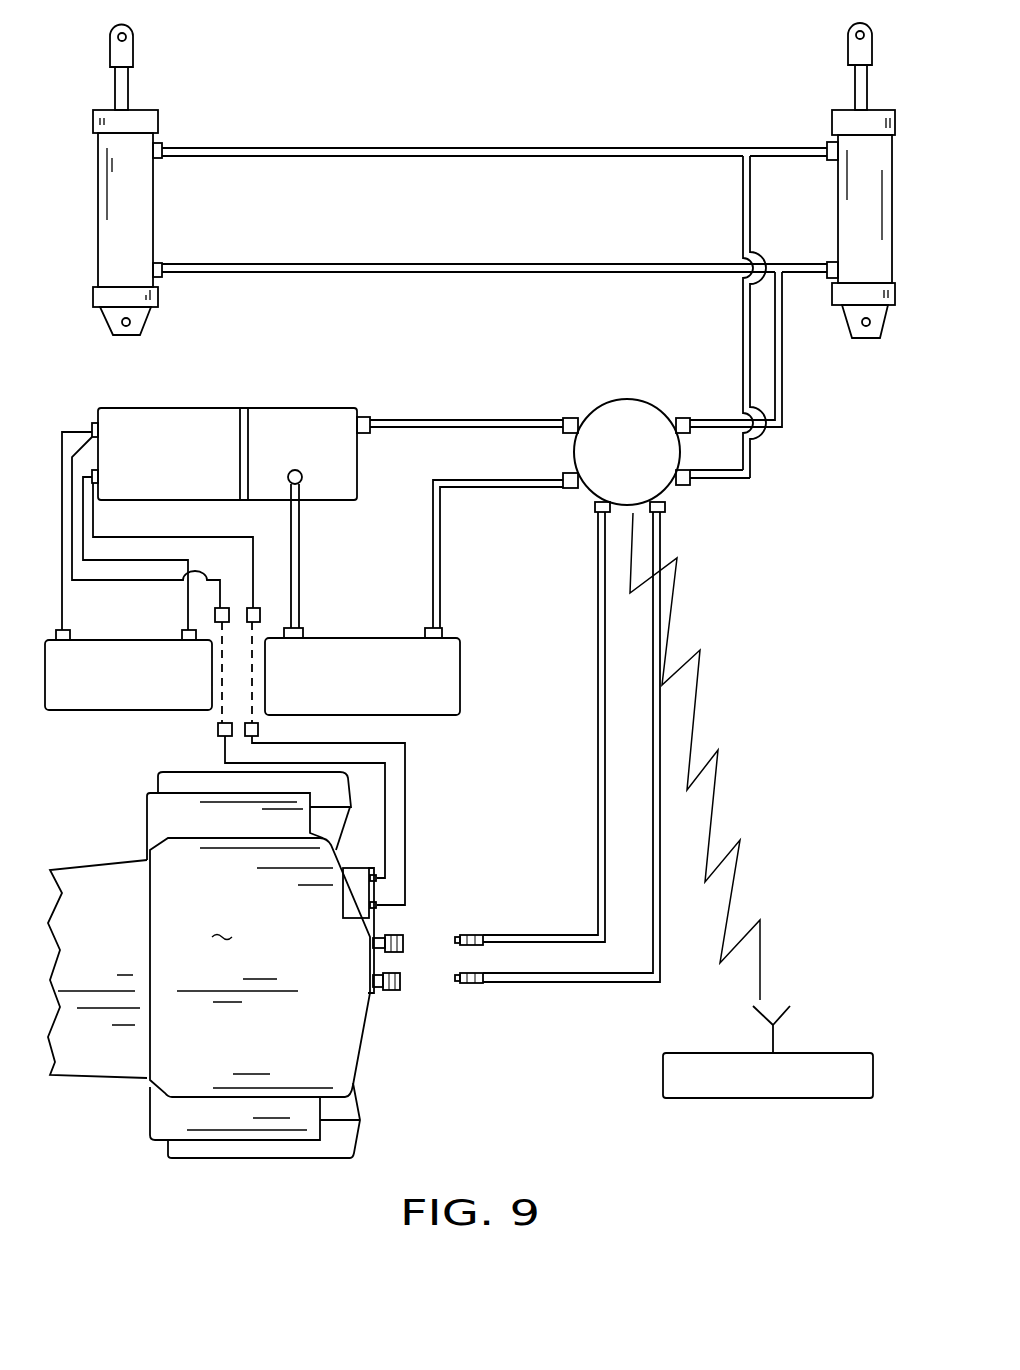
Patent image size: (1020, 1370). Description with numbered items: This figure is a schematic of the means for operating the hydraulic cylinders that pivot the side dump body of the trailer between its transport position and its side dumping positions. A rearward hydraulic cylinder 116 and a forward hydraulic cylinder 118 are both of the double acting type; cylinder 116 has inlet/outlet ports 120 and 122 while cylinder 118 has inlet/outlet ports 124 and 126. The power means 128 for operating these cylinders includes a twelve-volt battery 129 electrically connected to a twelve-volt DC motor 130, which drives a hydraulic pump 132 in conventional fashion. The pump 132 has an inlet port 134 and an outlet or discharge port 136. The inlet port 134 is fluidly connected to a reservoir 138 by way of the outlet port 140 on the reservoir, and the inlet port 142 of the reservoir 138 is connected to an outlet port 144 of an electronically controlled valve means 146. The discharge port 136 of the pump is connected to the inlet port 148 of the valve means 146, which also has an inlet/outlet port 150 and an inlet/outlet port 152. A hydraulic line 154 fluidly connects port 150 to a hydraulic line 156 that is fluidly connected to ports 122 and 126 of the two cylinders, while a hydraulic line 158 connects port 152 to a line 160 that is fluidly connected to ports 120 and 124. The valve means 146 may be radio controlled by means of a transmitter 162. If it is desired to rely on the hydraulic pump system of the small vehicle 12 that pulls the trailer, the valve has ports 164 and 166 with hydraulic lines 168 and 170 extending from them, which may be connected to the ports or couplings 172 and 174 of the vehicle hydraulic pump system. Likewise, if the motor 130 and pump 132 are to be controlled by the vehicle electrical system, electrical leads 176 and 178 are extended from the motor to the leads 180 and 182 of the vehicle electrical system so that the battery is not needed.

The small vehicle 12 is at (212, 965).
The rearward hydraulic cylinder 116 is at (133, 205).
The hydraulic cylinder 118 is at (877, 210).
The inlet/outlet port 120 is at (164, 147).
The inlet/outlet port 122 is at (163, 279).
The inlet/outlet port 124 is at (830, 145).
The inlet/outlet port 126 is at (830, 266).
The power means 128 is at (697, 613).
The 12-volt battery 129 is at (88, 712).
The 12-volt DC motor 130 is at (176, 408).
The hydraulic pump 132 is at (266, 408).
The inlet port 134 is at (303, 478).
The outlet or discharge port 136 is at (373, 413).
The reservoir 138 is at (370, 640).
The outlet port 140 is at (301, 632).
The inlet port 142 is at (440, 630).
The outlet port 144 is at (566, 486).
The electronically controlled valve means 146 is at (627, 399).
The inlet port 148 is at (567, 417).
The inlet/outlet port 150 is at (682, 417).
The inlet/outlet port 152 is at (692, 480).
The hydraulic line 154 is at (786, 378).
The hydraulic line 156 is at (640, 264).
The hydraulic line 158 is at (750, 466).
The hydraulic line 160 is at (591, 148).
The transmitter 162 is at (830, 1052).
The port 164 is at (602, 506).
The port 166 is at (667, 512).
The hydraulic line 168 is at (600, 762).
The hydraulic line 170 is at (668, 730).
The port or coupling 172 is at (400, 937).
The port or coupling 174 is at (398, 982).
The electrical lead 176 is at (211, 585).
The electrical lead 178 is at (255, 582).
The lead 180 is at (217, 748).
The lead 182 is at (406, 748).